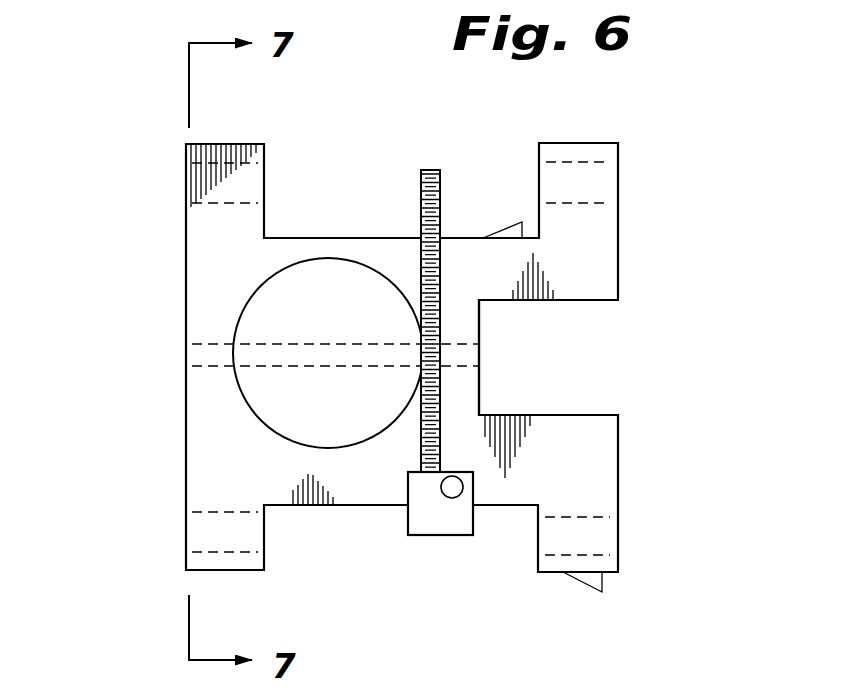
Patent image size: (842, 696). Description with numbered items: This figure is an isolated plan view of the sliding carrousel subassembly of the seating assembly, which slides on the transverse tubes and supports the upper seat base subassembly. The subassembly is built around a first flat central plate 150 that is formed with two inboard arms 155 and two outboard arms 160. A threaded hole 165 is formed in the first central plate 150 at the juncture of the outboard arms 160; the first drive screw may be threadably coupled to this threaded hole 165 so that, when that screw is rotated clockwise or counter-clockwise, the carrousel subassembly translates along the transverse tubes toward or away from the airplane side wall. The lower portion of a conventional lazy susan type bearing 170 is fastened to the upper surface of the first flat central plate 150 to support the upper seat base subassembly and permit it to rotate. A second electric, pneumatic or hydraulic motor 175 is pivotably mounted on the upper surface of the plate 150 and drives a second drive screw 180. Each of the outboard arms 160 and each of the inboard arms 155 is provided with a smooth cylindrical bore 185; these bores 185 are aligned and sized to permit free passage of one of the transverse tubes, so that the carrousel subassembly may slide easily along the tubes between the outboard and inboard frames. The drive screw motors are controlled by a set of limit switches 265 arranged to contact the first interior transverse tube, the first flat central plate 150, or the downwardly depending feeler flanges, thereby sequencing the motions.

The first flat central plate 150 is at (218, 275).
The inboard arms 155 is at (188, 143).
The outboard arms 160 is at (620, 143).
The threaded hole 165 is at (482, 357).
The lazy susan type bearing 170 is at (346, 254).
The second motor 175 is at (447, 537).
The second drive screw 180 is at (450, 188).
The cylindrical bores 185 is at (186, 182).
The limit switches 265 is at (516, 222).